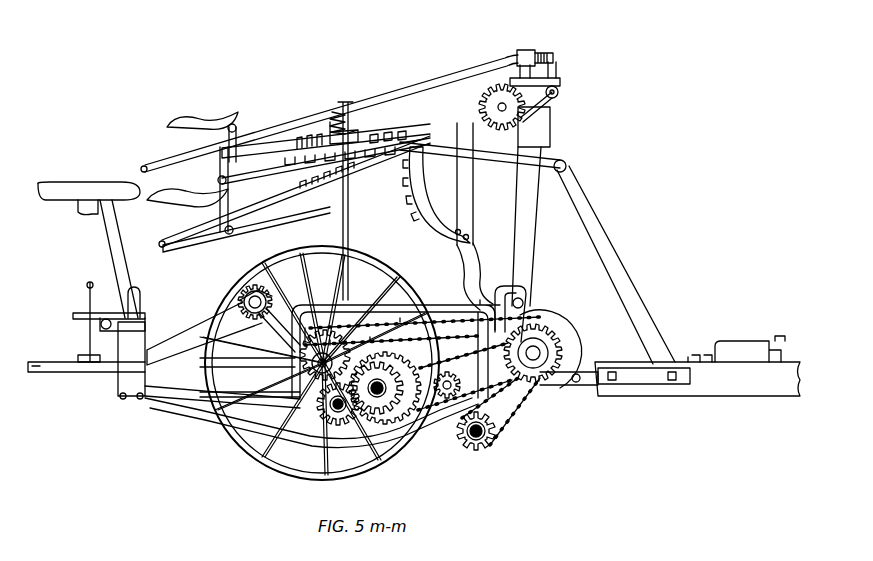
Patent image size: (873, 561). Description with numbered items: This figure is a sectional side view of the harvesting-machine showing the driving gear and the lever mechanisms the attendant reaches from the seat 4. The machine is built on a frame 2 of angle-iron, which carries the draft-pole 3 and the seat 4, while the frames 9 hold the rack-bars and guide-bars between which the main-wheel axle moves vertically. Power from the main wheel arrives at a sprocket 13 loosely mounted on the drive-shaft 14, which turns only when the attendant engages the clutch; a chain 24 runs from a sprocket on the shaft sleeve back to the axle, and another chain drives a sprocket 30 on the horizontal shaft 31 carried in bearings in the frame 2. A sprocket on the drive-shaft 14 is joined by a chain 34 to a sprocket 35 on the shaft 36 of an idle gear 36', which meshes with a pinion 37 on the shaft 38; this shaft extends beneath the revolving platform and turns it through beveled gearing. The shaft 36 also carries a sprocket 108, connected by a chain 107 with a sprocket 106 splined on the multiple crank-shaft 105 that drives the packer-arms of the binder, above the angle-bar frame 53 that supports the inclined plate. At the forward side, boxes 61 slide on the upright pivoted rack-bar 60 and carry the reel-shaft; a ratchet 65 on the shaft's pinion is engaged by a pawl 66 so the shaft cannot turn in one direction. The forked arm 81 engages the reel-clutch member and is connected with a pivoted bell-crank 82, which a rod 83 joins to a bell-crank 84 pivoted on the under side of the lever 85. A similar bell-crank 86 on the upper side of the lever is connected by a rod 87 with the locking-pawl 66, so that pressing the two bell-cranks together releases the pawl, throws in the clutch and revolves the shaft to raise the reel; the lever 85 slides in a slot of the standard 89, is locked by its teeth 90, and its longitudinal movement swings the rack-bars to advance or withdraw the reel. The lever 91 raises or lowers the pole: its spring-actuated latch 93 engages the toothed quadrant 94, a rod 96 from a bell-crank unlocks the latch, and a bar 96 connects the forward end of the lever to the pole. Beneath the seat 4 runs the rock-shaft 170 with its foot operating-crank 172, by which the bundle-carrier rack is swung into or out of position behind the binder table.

The frame 2 is at (128, 398).
The draft-pole 3 is at (680, 384).
The seat 4 is at (98, 190).
The frames 9 is at (224, 410).
The sprocket 13 is at (556, 322).
The drive-shaft 14 is at (541, 350).
The chain 24 is at (528, 303).
The sprocket 30 is at (496, 432).
The horizontal shaft 31 is at (460, 440).
The chain 34 is at (375, 396).
The sprocket 35 is at (366, 410).
The shaft 36 is at (347, 416).
The idle gear 36' is at (385, 401).
The pinion 37 is at (325, 414).
The shaft 38 is at (333, 410).
The angle-bar frame 53 is at (66, 367).
The rack-bar 60 is at (527, 229).
The boxes 61 is at (548, 136).
The ratchet 65 is at (508, 118).
The pawl 66 is at (540, 110).
The forked arm 81 is at (537, 52).
The bell-crank 82 is at (558, 70).
The rod 83 is at (318, 200).
The bell-crank 84 is at (222, 238).
The lever 85 is at (257, 174).
The bell-crank 86 is at (165, 165).
The rod 87 is at (400, 90).
The standard 89 is at (342, 233).
The teeth 90 is at (321, 181).
The lever 91 is at (226, 122).
The spring-actuated latch 93 is at (395, 152).
The quadrant 94 is at (424, 223).
The rod 96 is at (603, 262).
The multiple crank-shaft 105 is at (268, 300).
The sprocket 106 is at (243, 300).
The chain 107 is at (204, 333).
The sprocket 108 is at (395, 340).
The rock-shaft 170 is at (100, 328).
The foot operating-crank 172 is at (143, 318).